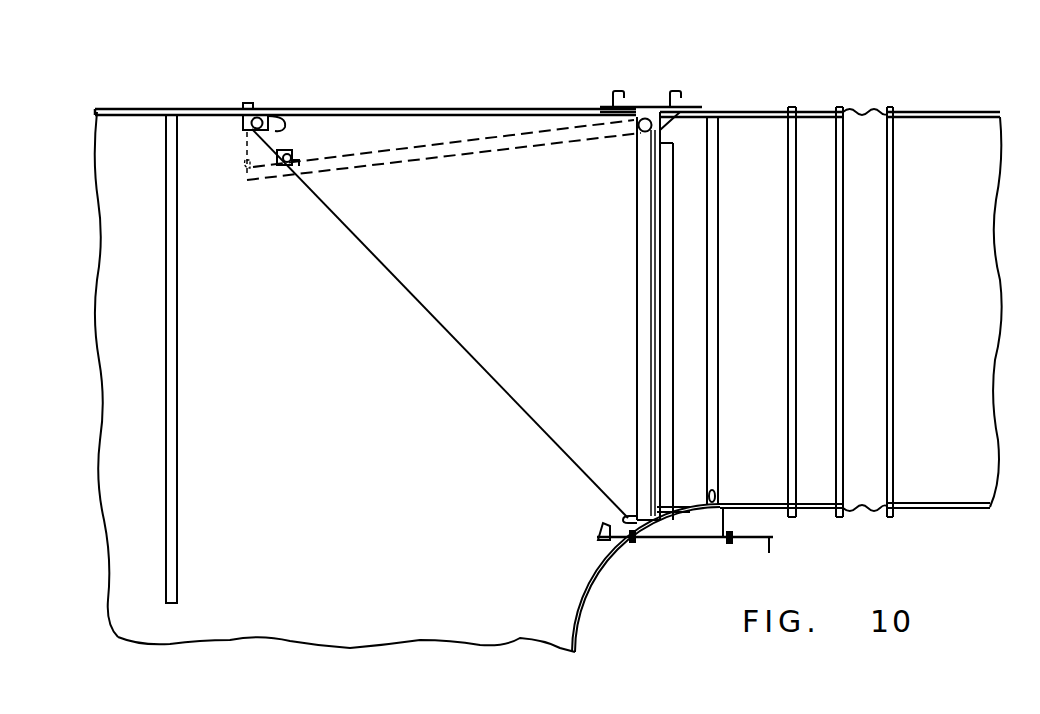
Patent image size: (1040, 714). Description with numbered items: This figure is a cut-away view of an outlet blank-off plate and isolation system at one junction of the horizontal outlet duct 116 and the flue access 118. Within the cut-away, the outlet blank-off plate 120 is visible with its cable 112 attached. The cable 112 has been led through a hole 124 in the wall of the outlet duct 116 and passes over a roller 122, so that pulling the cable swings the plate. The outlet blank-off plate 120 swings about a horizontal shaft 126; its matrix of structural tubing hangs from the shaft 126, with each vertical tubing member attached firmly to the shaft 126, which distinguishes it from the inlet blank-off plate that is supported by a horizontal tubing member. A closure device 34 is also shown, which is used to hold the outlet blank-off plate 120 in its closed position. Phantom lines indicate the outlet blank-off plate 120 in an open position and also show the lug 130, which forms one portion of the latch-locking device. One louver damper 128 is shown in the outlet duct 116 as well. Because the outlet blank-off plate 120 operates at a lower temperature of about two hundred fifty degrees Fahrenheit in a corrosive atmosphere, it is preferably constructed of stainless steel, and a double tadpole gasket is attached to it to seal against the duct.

The closure device 34 is at (695, 540).
The cable 112 is at (412, 292).
The horizontal outlet duct 116 is at (925, 150).
The flue access 118 is at (378, 636).
The outlet blank-off plate 120 is at (639, 279).
The roller 122 is at (279, 123).
The hole 124 is at (258, 104).
The shaft 126 is at (646, 118).
The louver damper 128 is at (812, 160).
The lug 130 is at (292, 150).